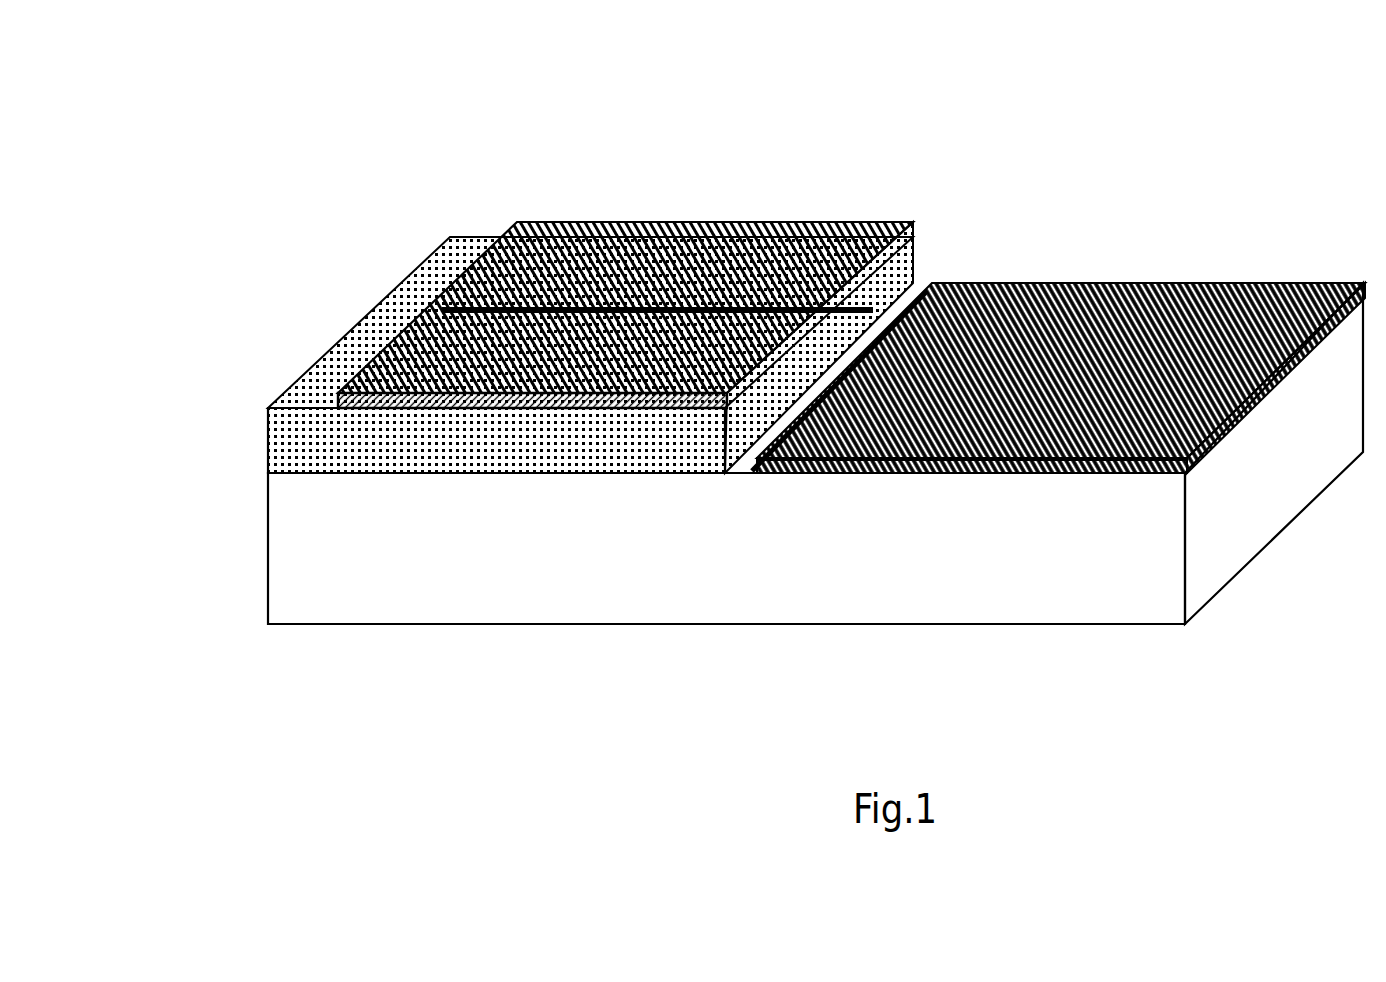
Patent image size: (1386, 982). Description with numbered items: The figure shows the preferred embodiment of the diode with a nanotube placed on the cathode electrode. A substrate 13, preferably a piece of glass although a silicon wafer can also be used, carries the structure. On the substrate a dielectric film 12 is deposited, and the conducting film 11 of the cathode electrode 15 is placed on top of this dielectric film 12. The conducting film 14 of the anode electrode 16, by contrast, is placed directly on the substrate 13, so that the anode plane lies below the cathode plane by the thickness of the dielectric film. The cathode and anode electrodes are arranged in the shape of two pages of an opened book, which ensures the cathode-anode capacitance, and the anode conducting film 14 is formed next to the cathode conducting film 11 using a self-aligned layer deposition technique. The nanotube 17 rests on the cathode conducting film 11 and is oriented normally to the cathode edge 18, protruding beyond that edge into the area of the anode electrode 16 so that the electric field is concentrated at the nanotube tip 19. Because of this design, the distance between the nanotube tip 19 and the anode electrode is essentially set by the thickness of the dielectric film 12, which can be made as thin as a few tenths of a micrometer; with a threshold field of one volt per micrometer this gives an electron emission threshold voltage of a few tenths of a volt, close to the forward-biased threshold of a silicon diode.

The conducting film 11 is at (412, 362).
The dielectric film 12 is at (290, 443).
The substrate 13 is at (603, 572).
The conducting film 14 is at (1060, 345).
The cathode electrode 15 is at (577, 193).
The anode electrode 16 is at (1200, 243).
The nanotube 17 is at (718, 305).
The cathode edge 18 is at (922, 205).
The nanotube tip 19 is at (917, 292).